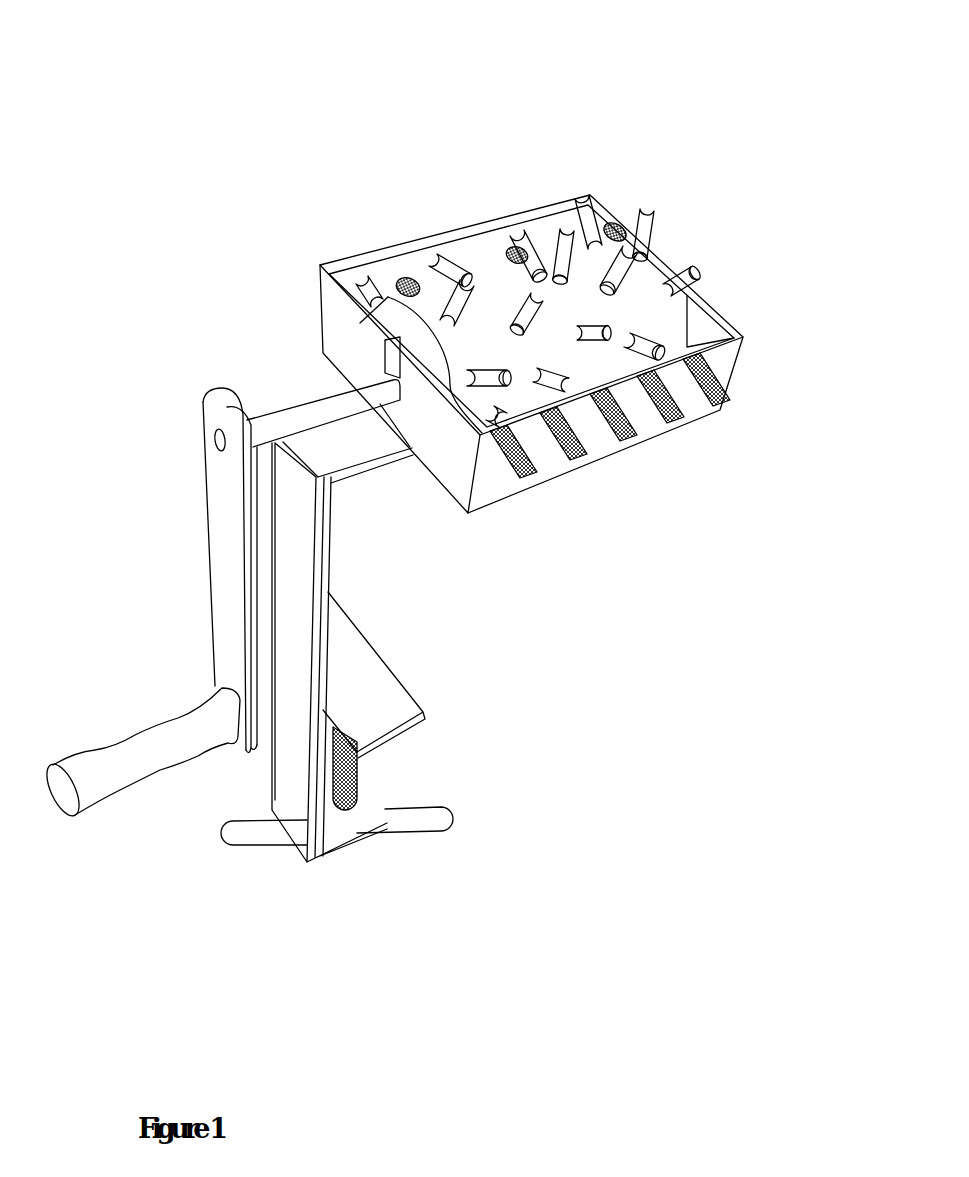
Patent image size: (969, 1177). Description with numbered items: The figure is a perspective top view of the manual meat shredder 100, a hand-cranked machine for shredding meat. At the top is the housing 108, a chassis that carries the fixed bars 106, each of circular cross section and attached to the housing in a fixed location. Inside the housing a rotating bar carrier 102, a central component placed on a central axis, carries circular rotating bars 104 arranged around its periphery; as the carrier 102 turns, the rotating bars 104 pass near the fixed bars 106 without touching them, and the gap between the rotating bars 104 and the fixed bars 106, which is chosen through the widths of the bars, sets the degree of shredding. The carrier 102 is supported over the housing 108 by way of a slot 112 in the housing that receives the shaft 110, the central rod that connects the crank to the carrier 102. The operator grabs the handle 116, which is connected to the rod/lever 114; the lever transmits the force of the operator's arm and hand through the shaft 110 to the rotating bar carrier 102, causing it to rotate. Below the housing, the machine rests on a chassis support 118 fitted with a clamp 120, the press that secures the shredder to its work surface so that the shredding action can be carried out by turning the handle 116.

The manual meat shredder 100 is at (365, 178).
The rotating bar carrier 102 is at (527, 367).
The rotating bars 104 is at (570, 230).
The fixed bars 106 is at (670, 417).
The housing 108 is at (497, 493).
The shaft 110 is at (293, 405).
The slot 112 is at (383, 350).
The rod/lever 114 is at (213, 590).
The handle 116 is at (130, 790).
The support 118 is at (293, 597).
The clamp 120 is at (350, 817).